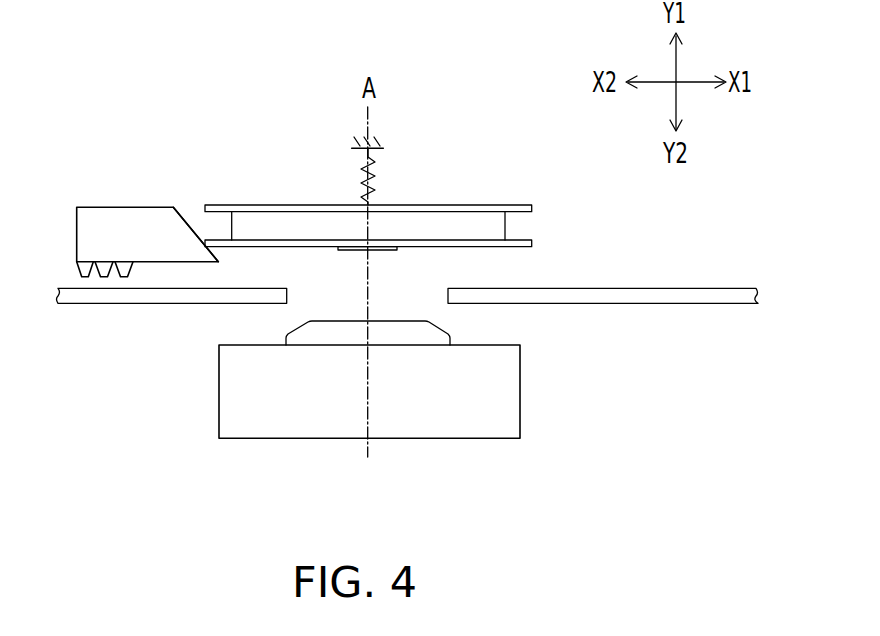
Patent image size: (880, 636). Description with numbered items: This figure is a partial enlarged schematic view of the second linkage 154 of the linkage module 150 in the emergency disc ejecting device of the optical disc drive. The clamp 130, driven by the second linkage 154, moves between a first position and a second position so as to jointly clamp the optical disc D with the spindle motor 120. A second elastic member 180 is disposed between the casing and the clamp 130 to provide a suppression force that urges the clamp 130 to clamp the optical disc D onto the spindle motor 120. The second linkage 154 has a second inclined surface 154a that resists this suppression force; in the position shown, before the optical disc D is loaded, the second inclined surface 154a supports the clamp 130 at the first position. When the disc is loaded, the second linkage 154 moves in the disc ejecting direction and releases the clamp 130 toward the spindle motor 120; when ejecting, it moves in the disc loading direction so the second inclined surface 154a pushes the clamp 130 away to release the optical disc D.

The spindle motor 120 is at (290, 423).
The clamp 130 is at (488, 223).
The linkage module 150 is at (147, 189).
The second linkage 154 is at (156, 200).
The second inclined surface 154a is at (197, 231).
The second elastic member 180 is at (375, 170).
The optical disc D is at (670, 293).